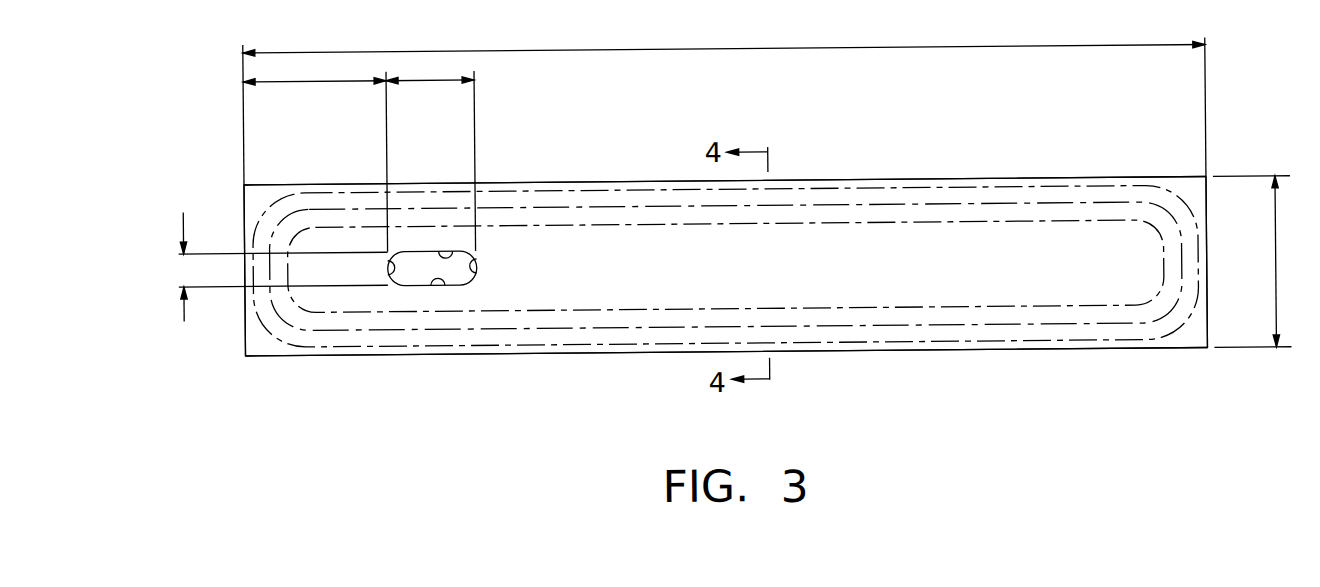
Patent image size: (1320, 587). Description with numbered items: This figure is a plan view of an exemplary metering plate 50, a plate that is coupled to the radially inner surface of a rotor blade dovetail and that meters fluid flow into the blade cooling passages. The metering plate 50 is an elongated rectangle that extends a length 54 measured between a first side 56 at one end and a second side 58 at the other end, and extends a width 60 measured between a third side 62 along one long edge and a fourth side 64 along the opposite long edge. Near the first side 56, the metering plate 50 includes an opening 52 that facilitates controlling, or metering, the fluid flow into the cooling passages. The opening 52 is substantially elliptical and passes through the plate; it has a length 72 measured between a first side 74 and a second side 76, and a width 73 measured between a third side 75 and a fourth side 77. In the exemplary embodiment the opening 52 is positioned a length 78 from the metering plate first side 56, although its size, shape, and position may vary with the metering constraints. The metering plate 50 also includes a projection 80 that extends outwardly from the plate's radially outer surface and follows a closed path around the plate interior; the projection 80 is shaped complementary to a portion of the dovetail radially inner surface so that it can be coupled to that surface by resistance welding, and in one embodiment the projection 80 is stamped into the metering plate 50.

The metering plate 50 is at (306, 398).
The opening 52 is at (414, 283).
The length 54 is at (753, 54).
The first side 56 is at (244, 202).
The second side 58 is at (1206, 260).
The width 60 is at (1275, 277).
The third side 62 is at (1067, 185).
The fourth side 64 is at (1002, 356).
The length 72 is at (433, 82).
The width 73 is at (185, 322).
The first side 74 is at (387, 270).
The third side 75 is at (445, 286).
The second side 76 is at (476, 274).
The fourth side 77 is at (443, 253).
The length 78 is at (322, 84).
The projection 80 is at (1082, 337).